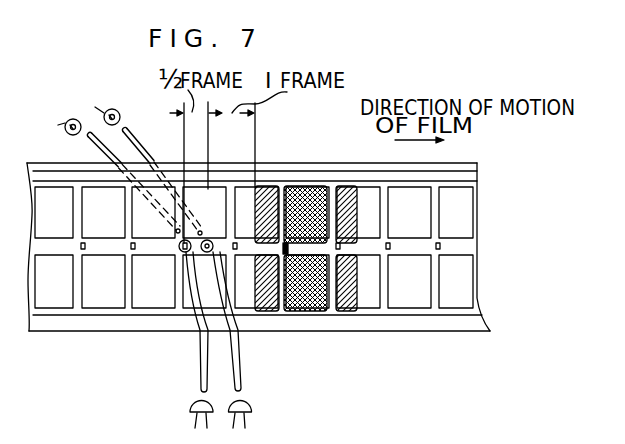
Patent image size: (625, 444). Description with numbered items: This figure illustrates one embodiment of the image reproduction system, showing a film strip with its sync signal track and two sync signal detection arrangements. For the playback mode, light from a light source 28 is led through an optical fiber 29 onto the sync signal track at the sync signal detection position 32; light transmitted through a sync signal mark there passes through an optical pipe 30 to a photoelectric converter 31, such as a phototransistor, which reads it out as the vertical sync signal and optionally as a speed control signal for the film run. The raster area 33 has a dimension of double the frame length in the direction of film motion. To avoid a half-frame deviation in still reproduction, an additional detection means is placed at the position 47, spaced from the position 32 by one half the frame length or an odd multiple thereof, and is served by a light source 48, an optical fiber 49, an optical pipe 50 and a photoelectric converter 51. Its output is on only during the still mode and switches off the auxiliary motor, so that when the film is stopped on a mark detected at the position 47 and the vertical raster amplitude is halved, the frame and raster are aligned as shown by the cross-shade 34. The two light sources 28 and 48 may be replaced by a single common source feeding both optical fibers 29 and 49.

The light source 28 is at (127, 104).
The optical fiber 29 is at (140, 140).
The optical pipe 30 is at (241, 358).
The photoelectric converter 31 is at (252, 408).
The sync signal detection position 32 is at (208, 240).
The raster area 33 is at (357, 214).
The cross-shade 34 is at (310, 186).
The still picture frame alignment detection position 47 is at (181, 251).
The light source 48 is at (73, 119).
The optical fiber 49 is at (93, 145).
The optical pipe 50 is at (200, 358).
The photoelectric converter 51 is at (190, 408).